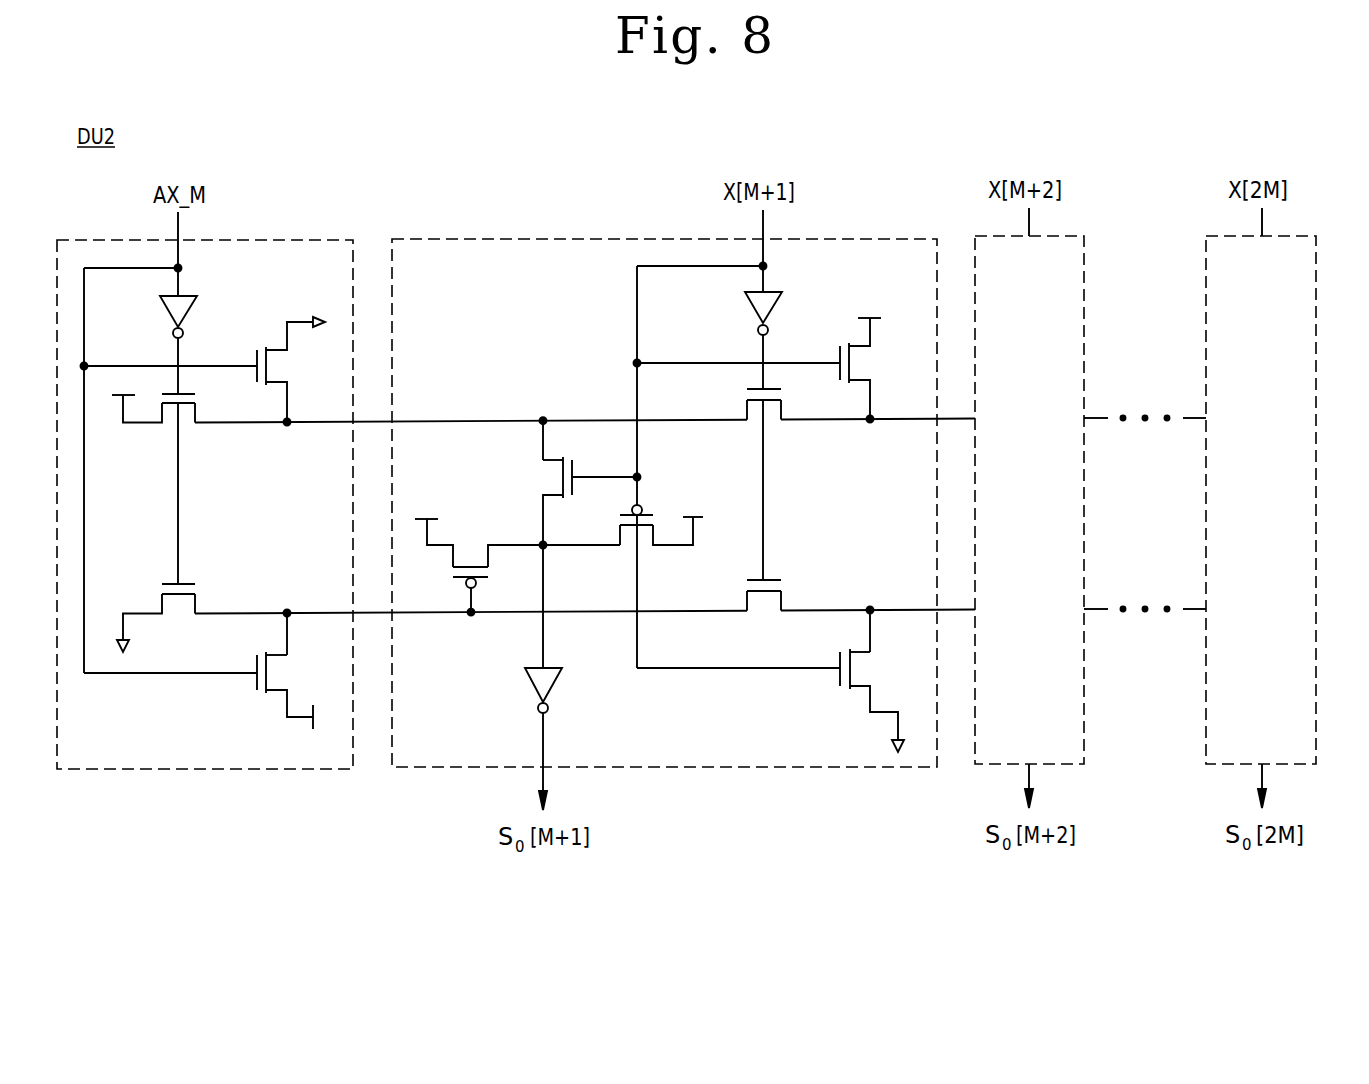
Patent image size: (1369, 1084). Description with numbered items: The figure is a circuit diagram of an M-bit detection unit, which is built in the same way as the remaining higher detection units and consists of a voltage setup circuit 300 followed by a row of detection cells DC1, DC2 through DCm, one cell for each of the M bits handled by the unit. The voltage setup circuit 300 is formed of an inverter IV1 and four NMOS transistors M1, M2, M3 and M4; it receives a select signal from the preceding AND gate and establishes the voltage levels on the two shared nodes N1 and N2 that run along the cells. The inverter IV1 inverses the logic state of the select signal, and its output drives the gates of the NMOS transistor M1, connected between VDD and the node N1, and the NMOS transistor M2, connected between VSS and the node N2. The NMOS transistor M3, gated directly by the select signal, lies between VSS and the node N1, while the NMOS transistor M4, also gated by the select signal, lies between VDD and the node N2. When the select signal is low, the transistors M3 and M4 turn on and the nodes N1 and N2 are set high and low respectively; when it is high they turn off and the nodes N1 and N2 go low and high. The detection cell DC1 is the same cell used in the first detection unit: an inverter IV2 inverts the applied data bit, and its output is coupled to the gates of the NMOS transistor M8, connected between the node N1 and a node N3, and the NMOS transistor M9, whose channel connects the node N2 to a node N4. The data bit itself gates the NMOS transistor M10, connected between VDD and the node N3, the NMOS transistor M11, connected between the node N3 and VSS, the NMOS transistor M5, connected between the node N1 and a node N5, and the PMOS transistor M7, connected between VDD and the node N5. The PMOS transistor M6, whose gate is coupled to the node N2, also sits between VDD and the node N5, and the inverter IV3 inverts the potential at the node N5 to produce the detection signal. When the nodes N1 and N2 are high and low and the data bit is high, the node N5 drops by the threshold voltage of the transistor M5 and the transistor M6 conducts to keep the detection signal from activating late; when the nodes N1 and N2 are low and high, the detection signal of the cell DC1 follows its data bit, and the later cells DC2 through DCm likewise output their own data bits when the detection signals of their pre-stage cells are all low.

The voltage setup circuit 300 is at (297, 240).
The detection cell DC1 is at (880, 237).
The detection cell DC2 is at (1084, 262).
The detection cell DCm is at (1316, 262).
The inverter IV1 is at (166, 318).
The inverter IV2 is at (750, 314).
The inverter IV3 is at (556, 686).
The NMOS transistor M1 is at (160, 423).
The NMOS transistor M2 is at (156, 618).
The NMOS transistor M3 is at (291, 369).
The NMOS transistor M4 is at (199, 671).
The NMOS transistor M5 is at (576, 544).
The PMOS transistor M6 is at (479, 565).
The PMOS transistor M7 is at (623, 541).
The NMOS transistor M8 is at (772, 419).
The NMOS transistor M9 is at (764, 610).
The NMOS transistor M10 is at (874, 368).
The NMOS transistor M11 is at (772, 681).
The node N1 is at (543, 416).
The node N2 is at (471, 617).
The node N3 is at (870, 424).
The node N4 is at (870, 605).
The node N5 is at (545, 549).